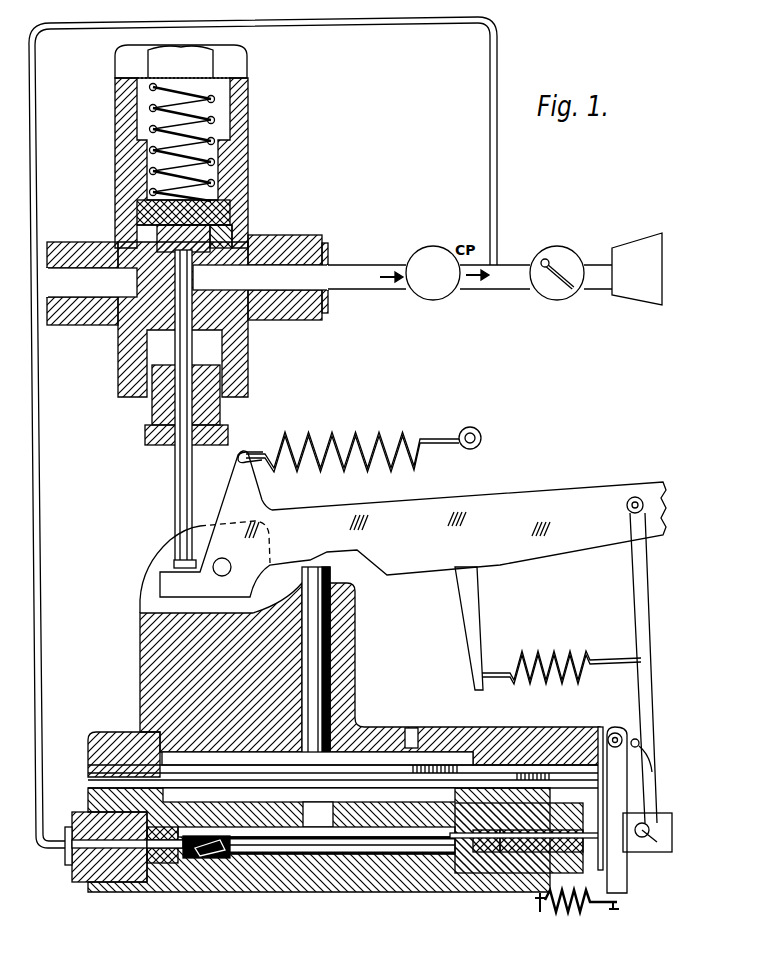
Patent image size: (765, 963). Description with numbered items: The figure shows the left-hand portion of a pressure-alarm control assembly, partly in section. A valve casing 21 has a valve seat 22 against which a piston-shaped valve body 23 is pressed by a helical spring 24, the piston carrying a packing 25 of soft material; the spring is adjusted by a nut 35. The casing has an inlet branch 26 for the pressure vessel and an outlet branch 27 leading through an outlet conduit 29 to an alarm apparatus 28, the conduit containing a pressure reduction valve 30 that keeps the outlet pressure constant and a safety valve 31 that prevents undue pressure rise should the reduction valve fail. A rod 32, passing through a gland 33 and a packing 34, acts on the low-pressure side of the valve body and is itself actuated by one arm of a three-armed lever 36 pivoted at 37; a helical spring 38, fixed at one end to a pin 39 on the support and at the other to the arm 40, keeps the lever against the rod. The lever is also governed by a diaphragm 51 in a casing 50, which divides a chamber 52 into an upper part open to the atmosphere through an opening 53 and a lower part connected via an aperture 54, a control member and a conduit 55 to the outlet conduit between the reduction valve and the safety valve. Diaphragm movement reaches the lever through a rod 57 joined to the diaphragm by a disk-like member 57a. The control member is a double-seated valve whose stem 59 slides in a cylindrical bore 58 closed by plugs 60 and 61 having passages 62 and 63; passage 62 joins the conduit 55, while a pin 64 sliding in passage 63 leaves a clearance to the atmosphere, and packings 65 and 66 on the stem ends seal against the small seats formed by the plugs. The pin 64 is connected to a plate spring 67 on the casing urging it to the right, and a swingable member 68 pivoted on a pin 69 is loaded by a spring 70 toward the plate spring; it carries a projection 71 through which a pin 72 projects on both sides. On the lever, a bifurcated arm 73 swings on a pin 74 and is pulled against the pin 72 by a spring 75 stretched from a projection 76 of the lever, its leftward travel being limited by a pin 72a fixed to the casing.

The valve casing 21 is at (238, 176).
The valve seat 22 is at (235, 236).
The valve body 23 is at (240, 151).
The helical spring 24 is at (213, 127).
The packing 25 is at (222, 234).
The inlet branch 26 is at (72, 242).
The outlet branch 27 is at (305, 248).
The alarm apparatus 28 is at (637, 255).
The outlet conduit 29 is at (360, 287).
The pressure reduction valve 30 is at (433, 296).
The safety valve 31 is at (560, 296).
The rod 32 is at (178, 468).
The gland 33 is at (160, 432).
The packing 34 is at (163, 358).
The nut 35 is at (232, 63).
The three-armed lever 36 is at (400, 518).
The pivot 37 is at (212, 570).
The helical spring 38 is at (355, 440).
The pin 39 is at (481, 437).
The arm 40 is at (243, 452).
The casing 50 is at (158, 662).
The diaphragm 51 is at (117, 783).
The chamber 52 is at (370, 758).
The opening 53 is at (413, 735).
The aperture 54 is at (317, 815).
The conduit 55 is at (40, 535).
The rod 57 is at (318, 621).
The disk-like member 57a is at (450, 762).
The cylindrical bore 58 is at (398, 858).
The valve stem 59 is at (440, 858).
The plug 60 is at (110, 868).
The plug 61 is at (535, 868).
The passage 62 is at (148, 862).
The passage 63 is at (540, 905).
The pin 64 is at (510, 860).
The packing 65 is at (198, 858).
The packing 66 is at (478, 848).
The plate spring 67 is at (598, 782).
The swingable member 68 is at (620, 878).
The pin 69 is at (612, 722).
The spring 70 is at (592, 912).
The projection 71 is at (660, 813).
The pin 72 is at (643, 842).
The pin 72a is at (640, 743).
The bifurcated arm 73 is at (636, 575).
The pin 74 is at (626, 506).
The spring 75 is at (538, 655).
The projection 76 is at (474, 610).